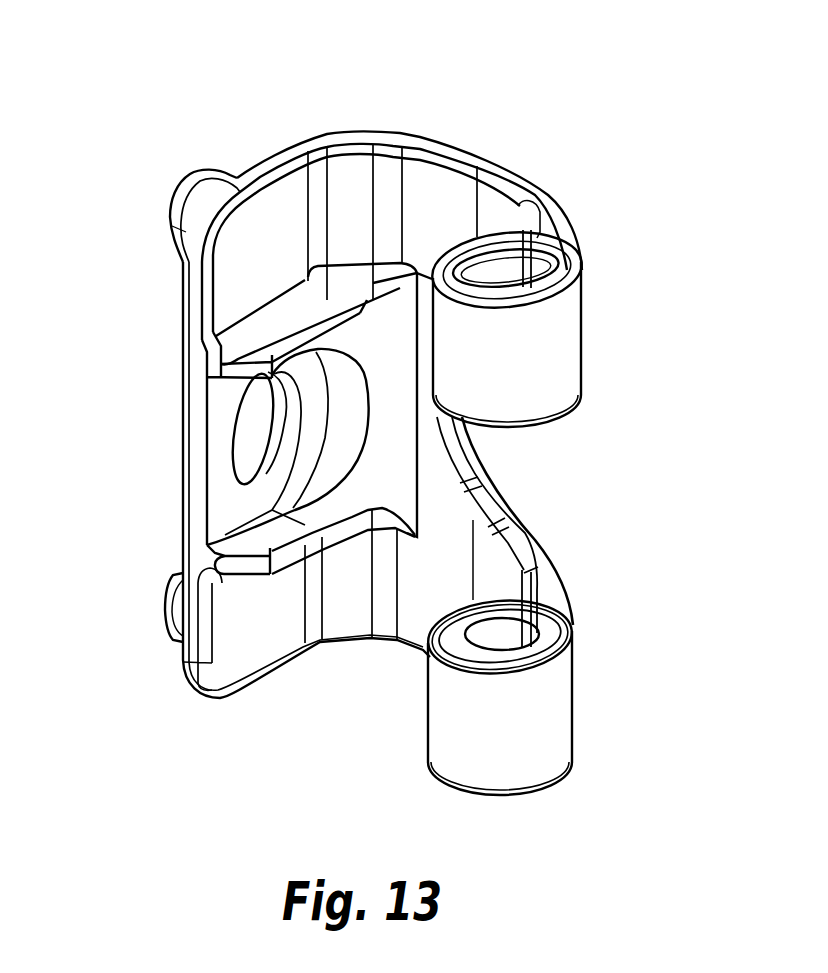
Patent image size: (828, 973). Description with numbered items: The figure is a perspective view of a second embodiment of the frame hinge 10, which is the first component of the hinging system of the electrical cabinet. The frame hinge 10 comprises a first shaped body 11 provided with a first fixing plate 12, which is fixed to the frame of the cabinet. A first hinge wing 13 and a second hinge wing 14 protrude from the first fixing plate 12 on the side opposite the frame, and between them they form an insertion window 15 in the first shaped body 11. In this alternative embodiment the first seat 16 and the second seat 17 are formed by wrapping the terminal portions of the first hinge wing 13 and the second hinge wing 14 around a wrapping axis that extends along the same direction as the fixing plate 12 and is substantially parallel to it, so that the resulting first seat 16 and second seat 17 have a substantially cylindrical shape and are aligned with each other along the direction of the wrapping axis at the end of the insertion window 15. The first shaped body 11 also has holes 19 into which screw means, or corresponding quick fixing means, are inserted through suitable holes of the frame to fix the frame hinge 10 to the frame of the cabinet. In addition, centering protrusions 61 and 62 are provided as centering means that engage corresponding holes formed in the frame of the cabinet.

The frame hinge 10 is at (150, 104).
The first shaped body 11 is at (350, 130).
The first fixing plate 12 is at (245, 268).
The first hinge wing 13 is at (563, 355).
The second hinge wing 14 is at (557, 720).
The insertion window 15 is at (530, 466).
The first seat 16 is at (502, 263).
The second seat 17 is at (532, 615).
The holes 19 is at (257, 432).
The centering protrusion 61 is at (178, 189).
The centering protrusion 62 is at (168, 597).